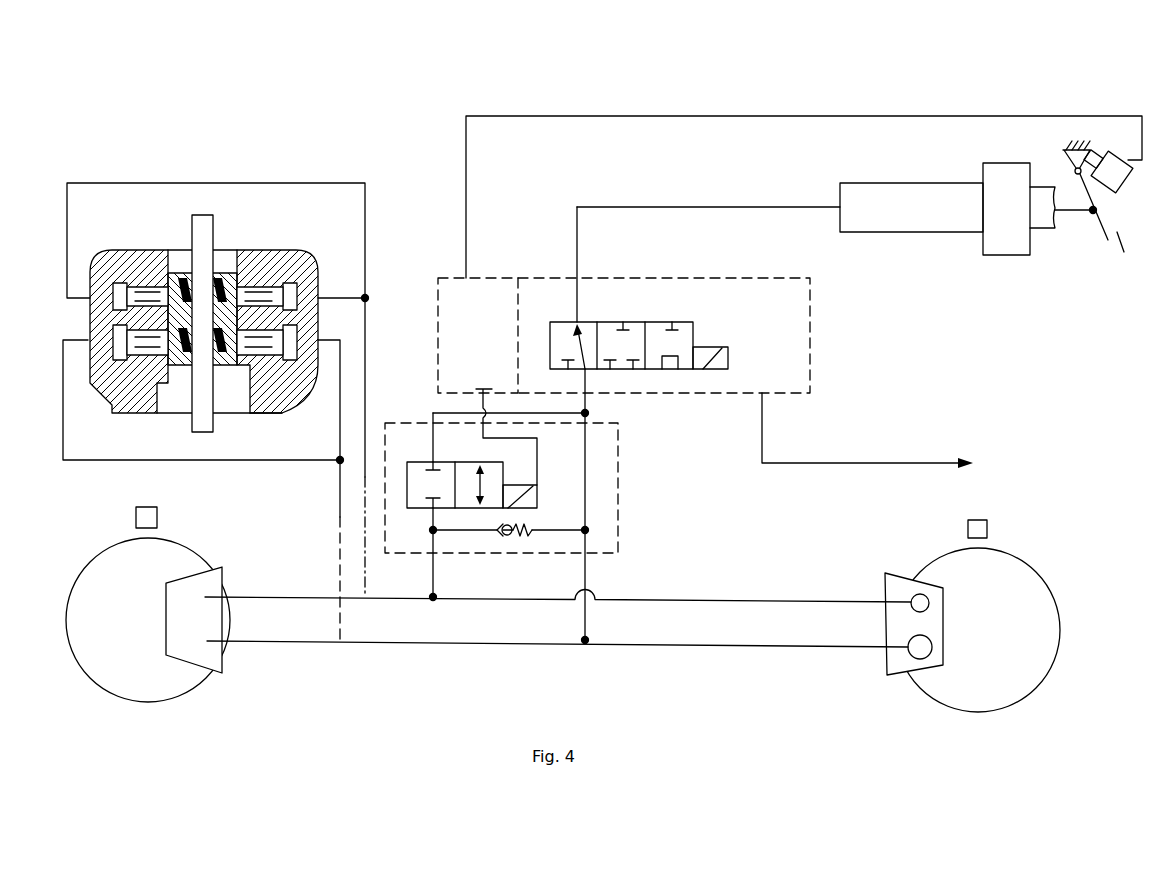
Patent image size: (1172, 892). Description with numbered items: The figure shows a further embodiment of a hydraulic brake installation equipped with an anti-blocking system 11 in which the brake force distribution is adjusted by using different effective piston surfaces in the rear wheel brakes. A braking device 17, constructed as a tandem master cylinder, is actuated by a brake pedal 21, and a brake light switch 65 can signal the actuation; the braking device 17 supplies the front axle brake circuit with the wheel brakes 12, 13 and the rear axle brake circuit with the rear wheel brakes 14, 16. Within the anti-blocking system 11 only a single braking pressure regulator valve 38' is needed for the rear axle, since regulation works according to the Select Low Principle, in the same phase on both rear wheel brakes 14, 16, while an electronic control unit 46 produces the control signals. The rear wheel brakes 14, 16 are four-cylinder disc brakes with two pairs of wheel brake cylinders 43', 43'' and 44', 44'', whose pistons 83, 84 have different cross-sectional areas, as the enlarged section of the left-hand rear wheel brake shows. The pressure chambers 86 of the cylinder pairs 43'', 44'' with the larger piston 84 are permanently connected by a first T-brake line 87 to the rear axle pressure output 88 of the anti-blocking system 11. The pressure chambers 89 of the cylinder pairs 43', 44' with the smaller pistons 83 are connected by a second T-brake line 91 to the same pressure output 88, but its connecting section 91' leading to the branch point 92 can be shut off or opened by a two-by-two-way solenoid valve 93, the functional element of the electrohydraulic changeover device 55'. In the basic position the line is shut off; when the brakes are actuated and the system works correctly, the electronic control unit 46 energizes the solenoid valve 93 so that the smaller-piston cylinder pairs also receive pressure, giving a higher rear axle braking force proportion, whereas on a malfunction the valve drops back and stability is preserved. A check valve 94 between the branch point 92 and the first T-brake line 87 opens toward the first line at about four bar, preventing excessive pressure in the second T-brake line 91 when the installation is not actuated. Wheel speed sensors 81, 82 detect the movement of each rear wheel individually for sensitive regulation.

The anti-blocking system 11 is at (766, 351).
The wheel brake 12 is at (986, 476).
The wheel brake 13 is at (986, 476).
The rear wheel brake 14 is at (185, 683).
The rear wheel brake 16 is at (982, 630).
The braking device 17 is at (937, 236).
The brake pedal 21 is at (1106, 240).
The braking pressure regulator valve 38' is at (639, 288).
The wheel brake cylinder pair 43' is at (159, 412).
The wheel brake cylinder pair 43'' is at (146, 491).
The wheel brake cylinder pair 44' is at (957, 594).
The wheel brake cylinder pair 44'' is at (957, 645).
The electronic control unit 46 is at (490, 287).
The electrohydraulic changeover device 55' is at (537, 510).
The brake light switch 65 is at (1118, 181).
The wheel speed sensor 81 is at (158, 518).
The wheel speed sensor 82 is at (988, 529).
The piston 83 is at (270, 300).
The piston 84 is at (267, 343).
The pressure chamber 86 is at (288, 345).
The first T-brake line 87 is at (712, 652).
The pressure output 88 is at (590, 413).
The pressure chamber 89 is at (219, 434).
The second T-brake line 91 is at (558, 580).
The connecting section 91' is at (469, 426).
The branch point 92 is at (436, 596).
The 2/2-way solenoid valve 93 is at (493, 475).
The check valve 94 is at (508, 538).